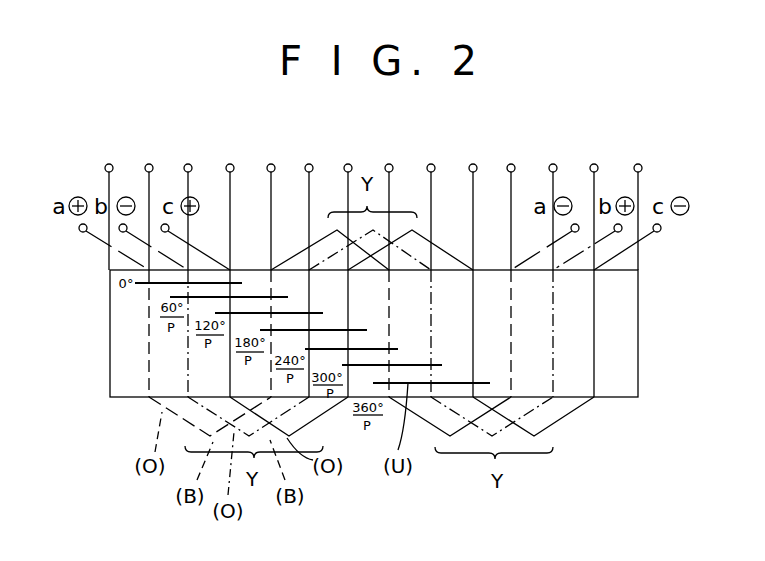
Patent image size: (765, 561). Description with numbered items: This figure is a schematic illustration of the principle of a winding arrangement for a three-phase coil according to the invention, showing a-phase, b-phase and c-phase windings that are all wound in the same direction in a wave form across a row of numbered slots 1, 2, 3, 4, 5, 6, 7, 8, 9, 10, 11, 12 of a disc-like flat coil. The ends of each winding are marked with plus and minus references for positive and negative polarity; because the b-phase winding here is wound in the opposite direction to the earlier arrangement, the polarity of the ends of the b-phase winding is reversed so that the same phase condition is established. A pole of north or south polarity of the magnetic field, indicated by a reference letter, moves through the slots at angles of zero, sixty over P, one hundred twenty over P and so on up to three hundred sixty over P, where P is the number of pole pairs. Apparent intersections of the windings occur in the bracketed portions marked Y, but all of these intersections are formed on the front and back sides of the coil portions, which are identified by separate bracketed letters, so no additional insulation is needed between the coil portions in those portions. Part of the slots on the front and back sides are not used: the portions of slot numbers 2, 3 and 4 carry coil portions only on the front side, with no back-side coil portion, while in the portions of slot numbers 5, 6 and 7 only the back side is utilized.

The coil lead terminal 1 is at (109, 200).
The slot number 2 is at (149, 200).
The slot number 3 is at (188, 200).
The slot number 4 is at (230, 200).
The slot number 5 is at (271, 200).
The slot number 6 is at (309, 200).
The slot number 7 is at (348, 200).
The coil lead terminal 8 is at (389, 200).
The coil lead terminal 9 is at (431, 200).
The coil lead terminal 10 is at (473, 200).
The coil lead terminal 11 is at (511, 200).
The coil lead terminal 12 is at (553, 200).